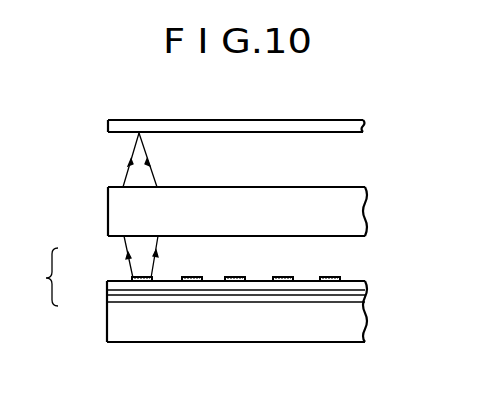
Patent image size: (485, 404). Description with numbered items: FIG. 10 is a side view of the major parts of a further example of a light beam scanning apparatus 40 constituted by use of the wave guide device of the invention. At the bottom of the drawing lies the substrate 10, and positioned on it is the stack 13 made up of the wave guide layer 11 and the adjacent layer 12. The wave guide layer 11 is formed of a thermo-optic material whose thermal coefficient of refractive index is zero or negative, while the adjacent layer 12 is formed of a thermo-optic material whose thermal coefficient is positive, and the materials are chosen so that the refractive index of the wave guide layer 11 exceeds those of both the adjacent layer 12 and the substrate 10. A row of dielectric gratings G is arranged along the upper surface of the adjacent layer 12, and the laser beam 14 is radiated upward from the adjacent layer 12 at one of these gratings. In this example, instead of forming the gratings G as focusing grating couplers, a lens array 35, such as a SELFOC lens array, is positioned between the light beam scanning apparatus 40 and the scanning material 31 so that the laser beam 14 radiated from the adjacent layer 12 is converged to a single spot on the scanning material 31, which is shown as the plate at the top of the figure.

The substrate 10 is at (112, 323).
The wave guide layer 11 is at (105, 296).
The adjacent layer 12 is at (107, 290).
The stack 13 is at (41, 277).
The laser beam 14 is at (129, 173).
The scanning material 31 is at (196, 123).
The lens array 35 is at (272, 196).
The light beam scanning apparatus 40 is at (251, 345).
The dielectric gratings G is at (143, 277).